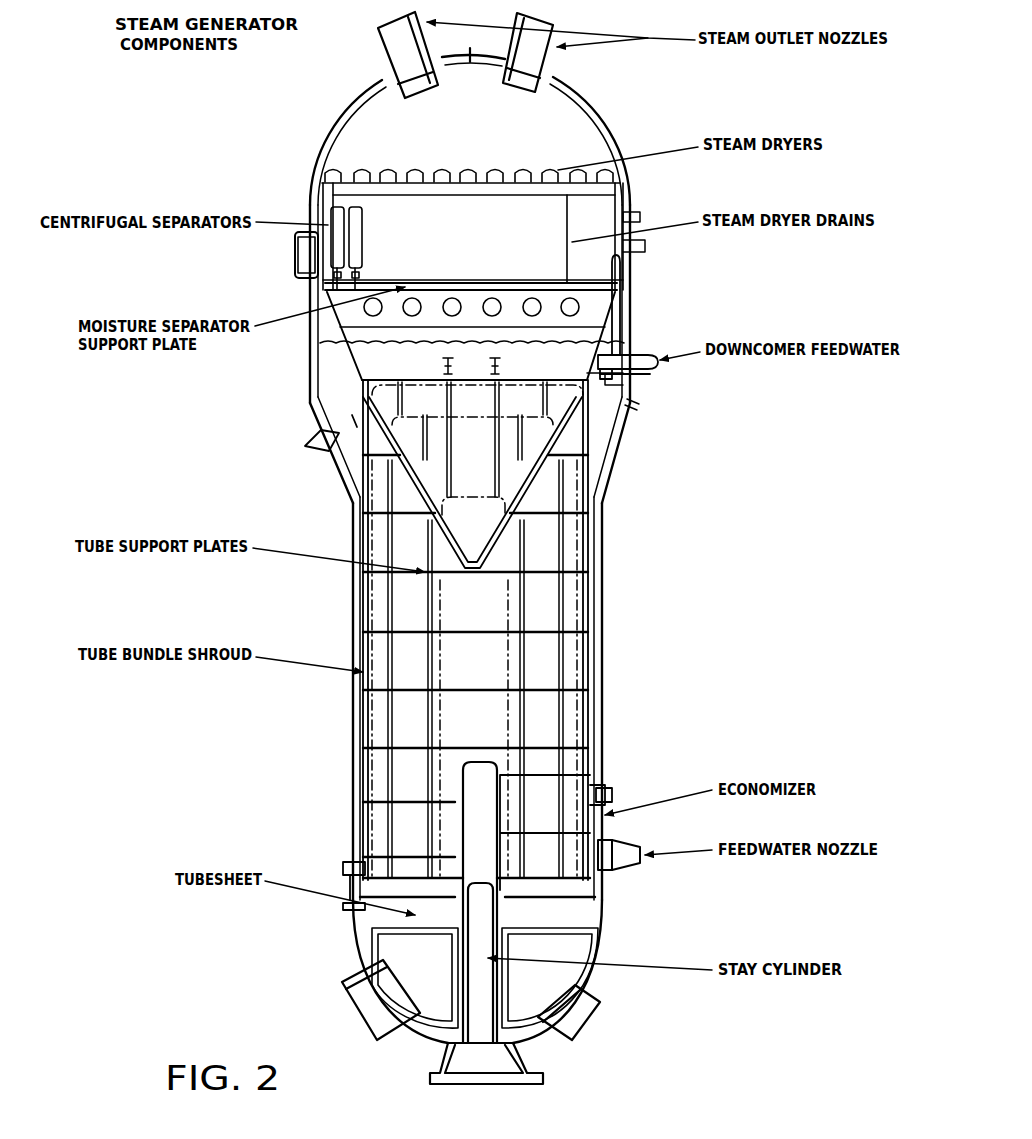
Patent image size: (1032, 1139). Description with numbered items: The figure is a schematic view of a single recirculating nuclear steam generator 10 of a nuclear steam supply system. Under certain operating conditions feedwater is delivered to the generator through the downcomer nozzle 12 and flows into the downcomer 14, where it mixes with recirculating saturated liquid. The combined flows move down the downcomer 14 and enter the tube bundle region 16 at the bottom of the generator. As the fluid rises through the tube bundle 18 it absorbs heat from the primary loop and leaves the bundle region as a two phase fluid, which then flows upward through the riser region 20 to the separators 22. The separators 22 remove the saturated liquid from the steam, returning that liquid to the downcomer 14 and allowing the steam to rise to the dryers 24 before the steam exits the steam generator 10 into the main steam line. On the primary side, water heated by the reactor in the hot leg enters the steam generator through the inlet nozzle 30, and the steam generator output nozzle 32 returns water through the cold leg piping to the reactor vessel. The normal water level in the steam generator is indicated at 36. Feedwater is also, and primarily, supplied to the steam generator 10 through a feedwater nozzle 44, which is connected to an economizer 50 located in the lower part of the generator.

The steam generator 10 is at (305, 166).
The downcomer nozzle 12 is at (650, 372).
The downcomer 14 is at (598, 452).
The tube bundle region 16 is at (585, 912).
The tube bundle 18 is at (540, 665).
The riser region 20 is at (375, 360).
The separators 22 is at (247, 248).
The dryers 24 is at (545, 225).
The inlet nozzle 30 is at (352, 1012).
The steam generator output nozzle 32 is at (590, 1035).
The normal water level 36 is at (580, 332).
The feedwater nozzle 44 is at (699, 859).
The economizer 50 is at (640, 832).